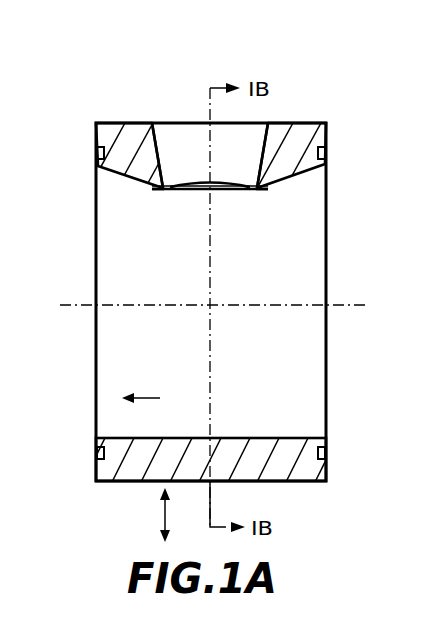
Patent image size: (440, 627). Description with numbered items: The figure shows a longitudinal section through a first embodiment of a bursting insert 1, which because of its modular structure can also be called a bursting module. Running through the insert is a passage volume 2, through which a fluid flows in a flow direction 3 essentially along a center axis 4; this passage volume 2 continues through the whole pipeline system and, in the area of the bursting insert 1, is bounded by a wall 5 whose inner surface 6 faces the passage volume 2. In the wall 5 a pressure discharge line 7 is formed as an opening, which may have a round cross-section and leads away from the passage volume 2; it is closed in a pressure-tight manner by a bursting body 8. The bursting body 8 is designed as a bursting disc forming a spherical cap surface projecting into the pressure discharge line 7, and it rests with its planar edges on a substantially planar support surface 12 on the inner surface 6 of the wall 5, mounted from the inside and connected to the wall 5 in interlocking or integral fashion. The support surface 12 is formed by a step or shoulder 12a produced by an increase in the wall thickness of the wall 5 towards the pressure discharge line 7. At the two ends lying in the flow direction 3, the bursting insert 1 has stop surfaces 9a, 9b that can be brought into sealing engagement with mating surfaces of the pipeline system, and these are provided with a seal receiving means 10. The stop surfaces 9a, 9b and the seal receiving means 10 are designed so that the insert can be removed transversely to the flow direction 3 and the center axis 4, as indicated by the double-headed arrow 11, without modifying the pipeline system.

The bursting insert 1 is at (312, 105).
The passage volume 2 is at (250, 284).
The flow direction 3 is at (161, 397).
The center axis 4 is at (350, 303).
The wall 5 is at (96, 462).
The inner surface 6 is at (293, 178).
The pressure discharge line 7 is at (178, 148).
The bursting body 8 is at (190, 191).
The stop surface 9a is at (95, 133).
The stop surface 9b is at (328, 135).
The seal receiving means 10 is at (327, 452).
The double-headed arrow 11 is at (163, 516).
The support surface 12 is at (162, 193).
The step or shoulder 12a is at (267, 192).